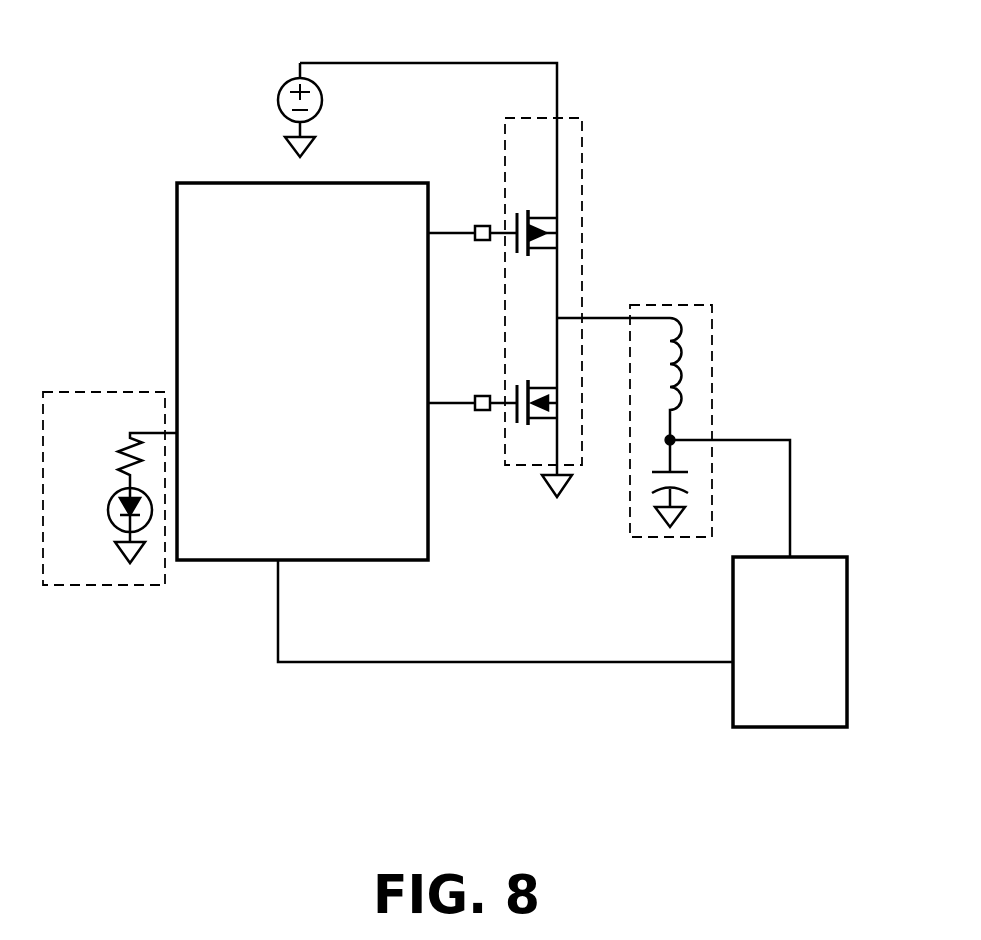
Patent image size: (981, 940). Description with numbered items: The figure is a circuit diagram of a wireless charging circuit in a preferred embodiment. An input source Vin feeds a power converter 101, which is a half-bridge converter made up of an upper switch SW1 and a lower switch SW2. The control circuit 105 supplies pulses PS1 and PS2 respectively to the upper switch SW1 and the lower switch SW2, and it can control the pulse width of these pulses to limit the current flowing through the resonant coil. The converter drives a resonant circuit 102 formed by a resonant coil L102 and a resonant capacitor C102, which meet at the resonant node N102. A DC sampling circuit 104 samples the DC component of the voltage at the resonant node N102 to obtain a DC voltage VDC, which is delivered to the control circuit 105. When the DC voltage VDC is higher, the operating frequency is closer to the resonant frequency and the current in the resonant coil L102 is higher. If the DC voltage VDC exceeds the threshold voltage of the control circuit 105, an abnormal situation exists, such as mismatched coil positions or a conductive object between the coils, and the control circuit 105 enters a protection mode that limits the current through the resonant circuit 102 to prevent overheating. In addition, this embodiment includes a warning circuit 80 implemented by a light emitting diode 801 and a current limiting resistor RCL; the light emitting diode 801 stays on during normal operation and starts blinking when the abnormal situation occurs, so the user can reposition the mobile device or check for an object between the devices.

The warning circuit 80 is at (94, 390).
The light emitting diode 801 is at (108, 525).
The current limiting resistor RCL is at (120, 460).
The power converter 101 is at (582, 120).
The upper switch SW1 is at (562, 231).
The lower switch SW2 is at (540, 425).
The pulse PS1 is at (472, 250).
The pulse PS2 is at (472, 390).
The resonant circuit 102 is at (690, 303).
The resonant coil L102 is at (680, 367).
The resonant node N102 is at (673, 437).
The resonant capacitor C102 is at (687, 477).
The DC sampling circuit 104 is at (818, 718).
The control circuit 105 is at (230, 562).
The DC voltage VDC is at (505, 628).
The input voltage source Vin is at (268, 110).